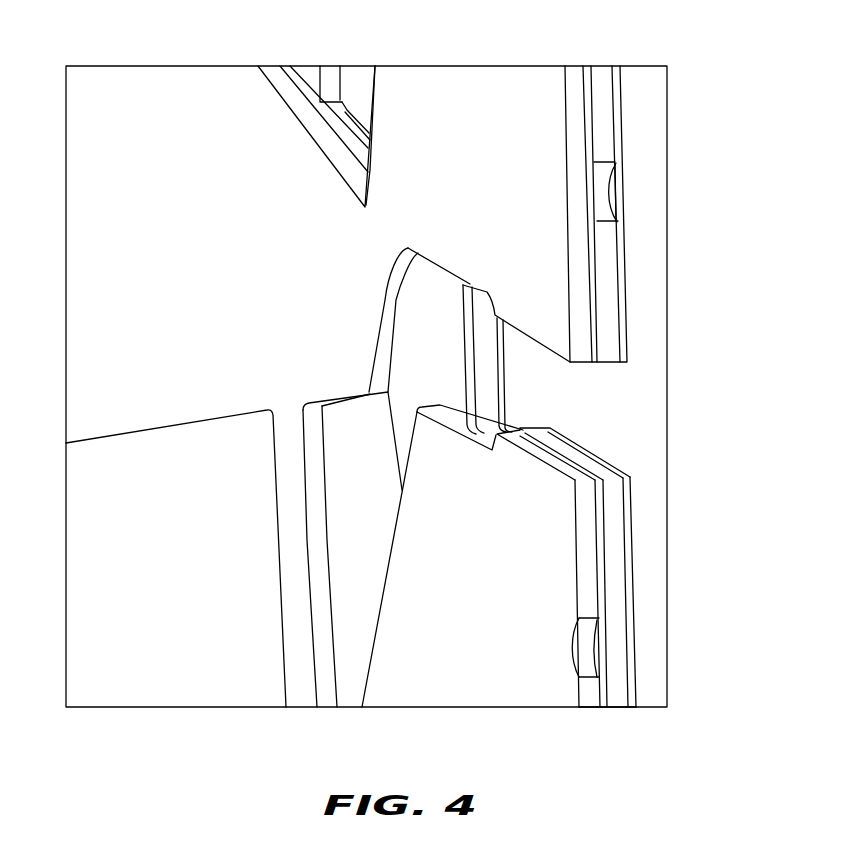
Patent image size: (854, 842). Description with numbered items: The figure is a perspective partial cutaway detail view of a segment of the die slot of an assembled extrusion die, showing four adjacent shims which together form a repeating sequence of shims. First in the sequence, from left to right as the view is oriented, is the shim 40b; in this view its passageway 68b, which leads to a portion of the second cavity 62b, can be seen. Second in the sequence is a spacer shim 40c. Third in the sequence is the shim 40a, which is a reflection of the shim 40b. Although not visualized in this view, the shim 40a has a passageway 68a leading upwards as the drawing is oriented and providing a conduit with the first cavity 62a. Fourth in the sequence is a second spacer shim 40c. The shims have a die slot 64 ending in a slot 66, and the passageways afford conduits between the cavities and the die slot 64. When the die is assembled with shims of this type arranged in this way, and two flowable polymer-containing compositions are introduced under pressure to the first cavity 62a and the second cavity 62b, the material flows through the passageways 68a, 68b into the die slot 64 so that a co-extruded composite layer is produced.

The first cavity 62a is at (353, 74).
The second cavity 62b is at (317, 517).
The shim 40a is at (600, 73).
The shim 40b is at (562, 698).
The spacer shim 40c is at (600, 568).
The die slot 64 is at (537, 452).
The slot 66 is at (601, 415).
The passageway 68a is at (489, 326).
The passageway 68b is at (388, 307).